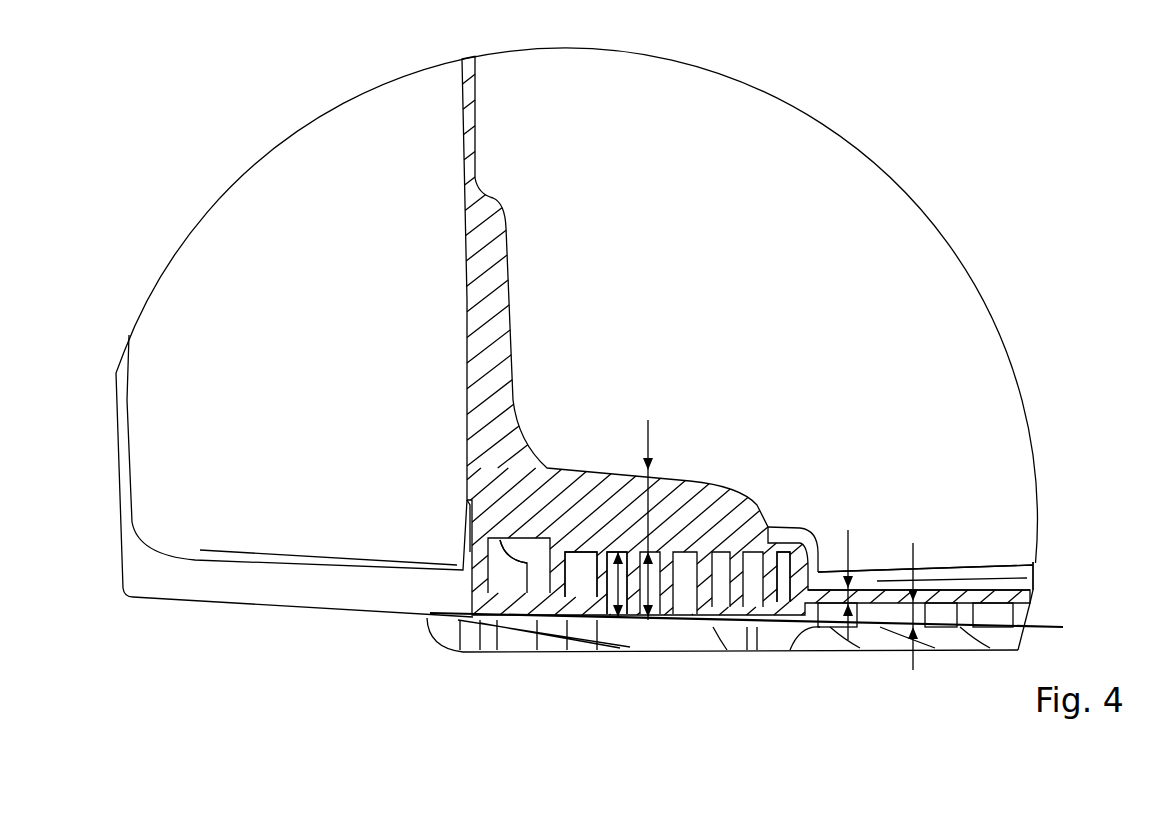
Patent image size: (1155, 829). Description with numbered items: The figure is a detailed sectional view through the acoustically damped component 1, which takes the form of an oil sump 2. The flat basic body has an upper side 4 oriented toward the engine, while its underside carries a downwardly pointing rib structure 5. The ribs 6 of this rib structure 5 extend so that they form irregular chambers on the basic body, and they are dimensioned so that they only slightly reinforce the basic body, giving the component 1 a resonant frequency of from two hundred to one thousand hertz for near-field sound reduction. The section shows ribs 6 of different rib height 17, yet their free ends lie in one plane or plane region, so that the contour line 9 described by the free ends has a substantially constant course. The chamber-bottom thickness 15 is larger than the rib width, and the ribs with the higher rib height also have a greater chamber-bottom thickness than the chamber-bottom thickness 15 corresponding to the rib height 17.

The acoustically damped component 1 is at (236, 652).
The oil sump 2 is at (300, 677).
The upper side 4 is at (737, 306).
The rib structure 5 is at (948, 686).
The rib 6 is at (933, 627).
The contour line 9 is at (1045, 627).
The chamber-bottom thickness 15 is at (827, 650).
The rib height 17 is at (865, 647).